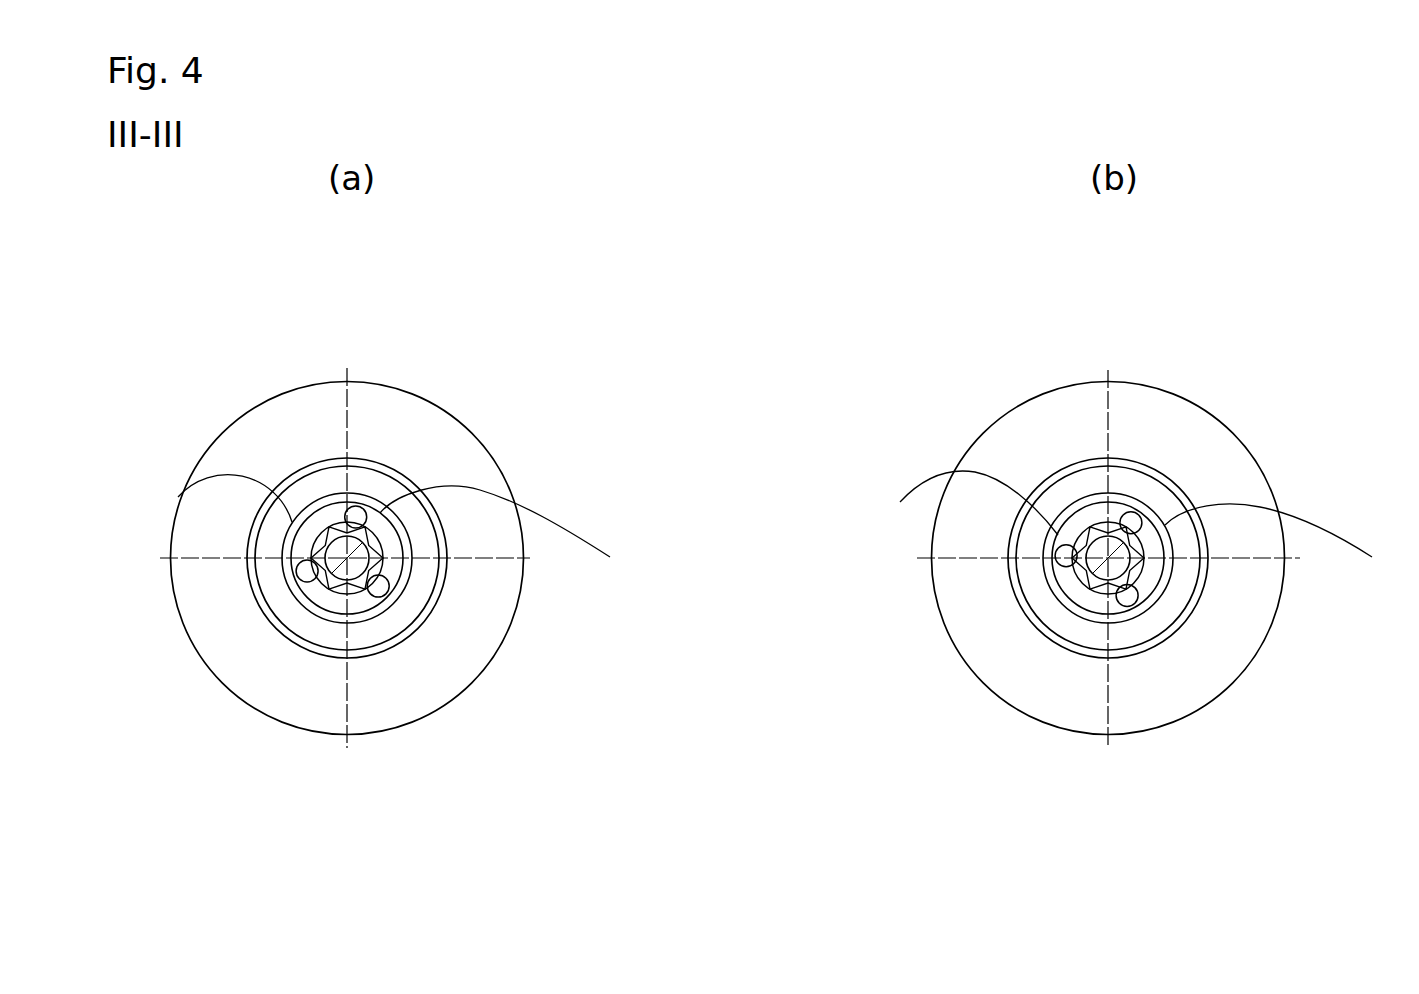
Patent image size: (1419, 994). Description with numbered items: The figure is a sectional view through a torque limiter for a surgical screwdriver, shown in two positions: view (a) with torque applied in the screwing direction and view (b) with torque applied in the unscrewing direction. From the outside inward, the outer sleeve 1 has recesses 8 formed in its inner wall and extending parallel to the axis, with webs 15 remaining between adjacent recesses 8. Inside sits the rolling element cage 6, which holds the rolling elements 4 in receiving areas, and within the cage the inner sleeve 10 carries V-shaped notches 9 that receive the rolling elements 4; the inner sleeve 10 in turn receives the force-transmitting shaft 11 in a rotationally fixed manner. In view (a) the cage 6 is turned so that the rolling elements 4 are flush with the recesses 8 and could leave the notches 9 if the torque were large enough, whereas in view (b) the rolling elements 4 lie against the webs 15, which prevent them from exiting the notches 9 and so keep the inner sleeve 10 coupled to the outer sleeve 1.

The outer sleeve 1 is at (285, 481).
The rolling element 4 is at (318, 580).
The rolling element cage 6 is at (325, 600).
The recess 8 is at (360, 495).
The notch 9 is at (178, 497).
The inner sleeve 10 is at (358, 580).
The force-transmitting shaft 11 is at (353, 565).
The web 15 is at (897, 536).